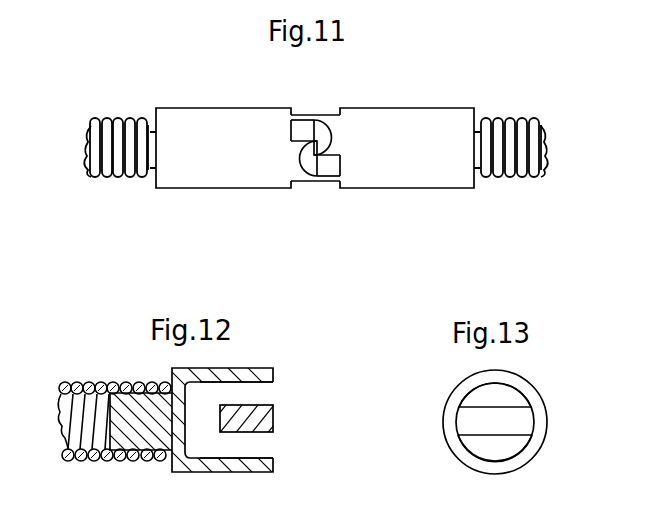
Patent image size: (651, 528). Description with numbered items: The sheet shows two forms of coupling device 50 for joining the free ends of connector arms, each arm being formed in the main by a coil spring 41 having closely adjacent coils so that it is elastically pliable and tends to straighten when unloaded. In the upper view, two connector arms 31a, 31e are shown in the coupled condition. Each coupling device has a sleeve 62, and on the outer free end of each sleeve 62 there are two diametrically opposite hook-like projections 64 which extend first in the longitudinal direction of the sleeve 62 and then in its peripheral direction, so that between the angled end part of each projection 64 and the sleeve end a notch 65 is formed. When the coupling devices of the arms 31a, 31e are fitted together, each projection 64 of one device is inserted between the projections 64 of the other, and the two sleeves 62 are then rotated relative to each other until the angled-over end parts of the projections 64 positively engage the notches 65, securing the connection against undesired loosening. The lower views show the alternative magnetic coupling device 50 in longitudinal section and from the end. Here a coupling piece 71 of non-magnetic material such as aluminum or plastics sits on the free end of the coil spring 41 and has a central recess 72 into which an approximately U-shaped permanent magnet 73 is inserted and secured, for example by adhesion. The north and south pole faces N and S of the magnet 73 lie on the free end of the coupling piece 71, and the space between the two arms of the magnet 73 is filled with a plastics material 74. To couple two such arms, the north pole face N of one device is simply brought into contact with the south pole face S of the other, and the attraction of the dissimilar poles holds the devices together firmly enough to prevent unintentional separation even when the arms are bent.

In FIG. 11, the connector arm 31a is at (115, 117).
In FIG. 11, the connector arm 31e is at (522, 118).
In FIG. 11, the coupling device 50 is at (315, 148).
In FIG. 11, the sleeve 62 is at (212, 128).
In FIG. 11, the hook-like projection 64 is at (330, 132).
In FIG. 11, the notch 65 is at (297, 147).
In FIG. 12, the coil spring 41 is at (93, 459).
In FIG. 12, the coupling piece 71 is at (233, 473).
In FIG. 13, the coupling piece 71 is at (482, 473).
In FIG. 12, the central recess 72 is at (187, 453).
In FIG. 12, the permanent magnet 73 is at (247, 392).
In FIG. 13, the permanent magnet 73 is at (472, 453).
In FIG. 12, the plastics material 74 is at (258, 424).
In FIG. 13, the plastics material 74 is at (467, 423).
In FIG. 12, the north pole face N is at (273, 395).
In FIG. 13, the north pole face N is at (507, 398).
In FIG. 12, the south pole face S is at (273, 445).
In FIG. 13, the south pole face S is at (510, 443).